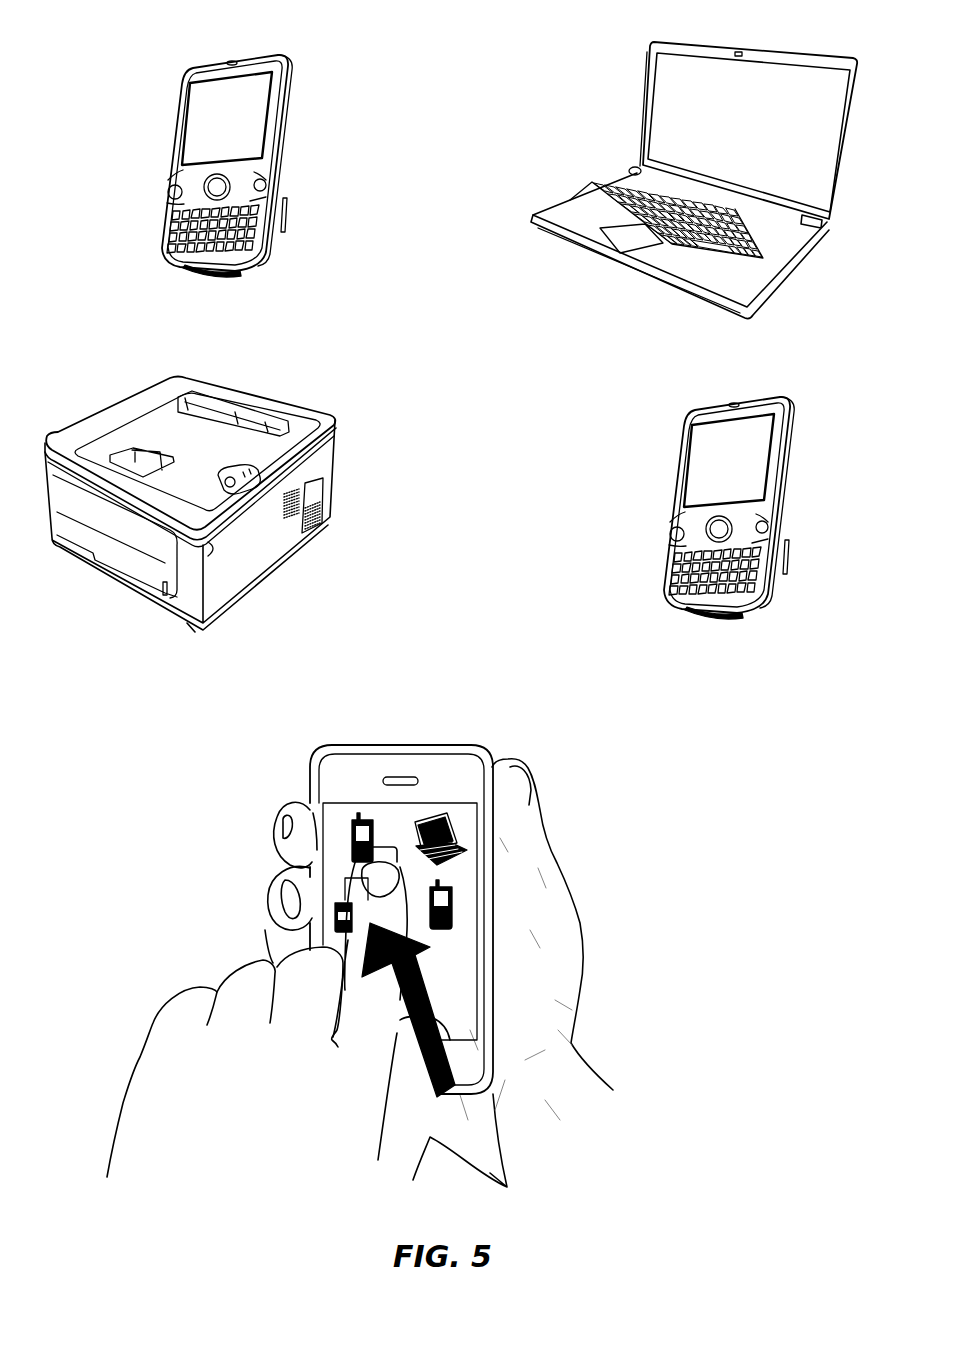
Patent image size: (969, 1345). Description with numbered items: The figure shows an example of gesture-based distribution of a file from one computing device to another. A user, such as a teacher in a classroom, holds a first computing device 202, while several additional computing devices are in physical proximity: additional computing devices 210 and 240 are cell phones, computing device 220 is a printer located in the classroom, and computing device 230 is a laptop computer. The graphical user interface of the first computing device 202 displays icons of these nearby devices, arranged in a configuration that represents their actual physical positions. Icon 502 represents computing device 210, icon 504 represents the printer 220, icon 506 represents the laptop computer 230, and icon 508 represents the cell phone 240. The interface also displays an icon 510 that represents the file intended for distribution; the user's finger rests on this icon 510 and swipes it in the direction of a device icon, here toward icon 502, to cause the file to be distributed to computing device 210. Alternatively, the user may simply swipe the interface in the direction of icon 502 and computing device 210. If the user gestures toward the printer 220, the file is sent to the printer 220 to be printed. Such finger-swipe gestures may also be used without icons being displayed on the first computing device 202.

The first computing device 202 is at (388, 743).
The additional computing device 210 is at (188, 70).
The computing device 220 is at (155, 384).
The computing device 230 is at (643, 133).
The additional computing device 240 is at (680, 440).
The icon 502 is at (347, 843).
The icon 504 is at (333, 923).
The icon 506 is at (447, 833).
The icon 508 is at (452, 913).
The icon 510 is at (385, 843).